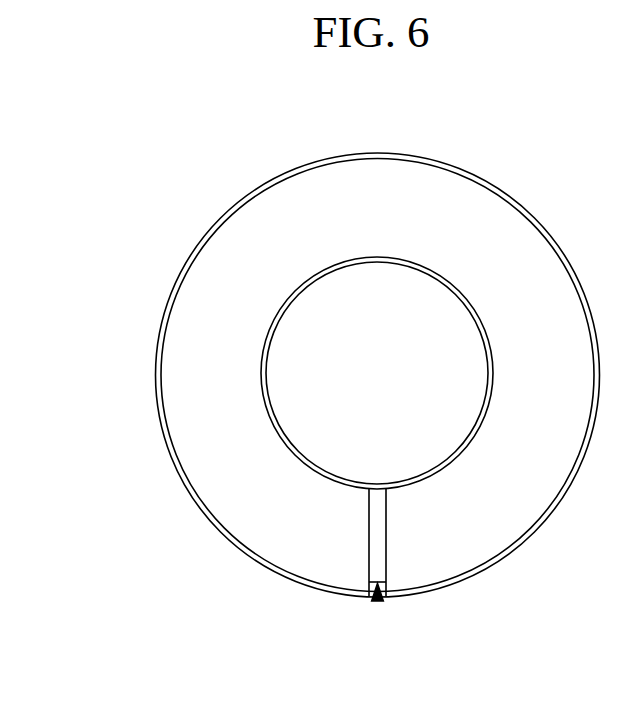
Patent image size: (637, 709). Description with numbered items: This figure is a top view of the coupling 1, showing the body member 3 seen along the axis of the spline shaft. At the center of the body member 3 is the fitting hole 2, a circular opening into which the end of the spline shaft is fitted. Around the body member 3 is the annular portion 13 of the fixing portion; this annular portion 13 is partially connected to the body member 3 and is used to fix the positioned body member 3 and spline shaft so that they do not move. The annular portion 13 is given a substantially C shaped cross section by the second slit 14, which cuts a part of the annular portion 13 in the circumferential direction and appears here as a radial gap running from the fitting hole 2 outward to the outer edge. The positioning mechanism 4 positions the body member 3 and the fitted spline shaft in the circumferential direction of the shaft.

The coupling 1 is at (93, 193).
The fitting hole 2 is at (308, 287).
The body member 3 is at (378, 603).
The positioning mechanism 4 is at (223, 203).
The annular portion 13 is at (316, 197).
The second slit 14 is at (371, 511).